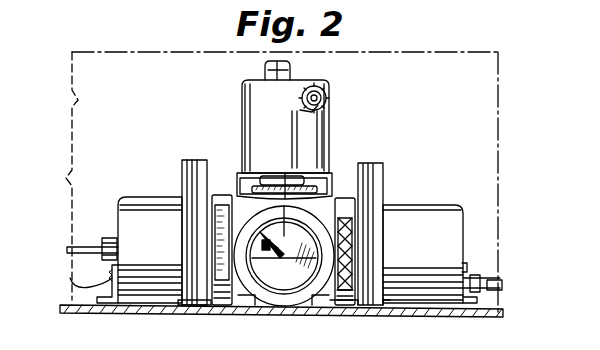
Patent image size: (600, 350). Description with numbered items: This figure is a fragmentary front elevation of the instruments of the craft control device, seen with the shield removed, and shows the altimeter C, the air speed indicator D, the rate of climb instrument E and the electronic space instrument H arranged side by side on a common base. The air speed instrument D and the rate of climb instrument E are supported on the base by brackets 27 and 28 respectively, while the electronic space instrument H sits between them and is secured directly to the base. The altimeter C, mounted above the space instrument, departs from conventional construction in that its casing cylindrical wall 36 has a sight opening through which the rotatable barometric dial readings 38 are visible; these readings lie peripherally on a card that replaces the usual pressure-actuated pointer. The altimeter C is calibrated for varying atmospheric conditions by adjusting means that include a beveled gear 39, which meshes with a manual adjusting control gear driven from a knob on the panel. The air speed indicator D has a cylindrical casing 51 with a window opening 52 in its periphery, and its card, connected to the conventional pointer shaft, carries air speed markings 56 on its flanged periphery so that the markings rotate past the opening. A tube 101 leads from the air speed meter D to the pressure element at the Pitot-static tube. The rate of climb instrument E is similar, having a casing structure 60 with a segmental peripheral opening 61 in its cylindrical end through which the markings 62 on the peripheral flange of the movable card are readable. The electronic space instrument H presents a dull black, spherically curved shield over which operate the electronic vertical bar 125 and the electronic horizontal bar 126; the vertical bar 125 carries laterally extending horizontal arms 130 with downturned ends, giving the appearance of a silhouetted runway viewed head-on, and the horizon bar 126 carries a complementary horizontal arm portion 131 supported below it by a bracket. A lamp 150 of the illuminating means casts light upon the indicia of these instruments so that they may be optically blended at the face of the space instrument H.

The altimeter C is at (262, 108).
The beveled gear 39 is at (326, 95).
The barometric dial readings 38 is at (310, 176).
The casing cylindrical wall 36 is at (328, 190).
The air speed markings 56 is at (230, 200).
The casing 51 is at (147, 213).
The lamp 150 is at (188, 233).
The tube 101 is at (72, 253).
The bracket 27 is at (70, 290).
The air speed indicator D is at (135, 269).
The window opening 52 is at (202, 306).
The electronic horizon bar 126 is at (272, 263).
The horizontal arm portion 131 is at (282, 272).
The electronic space instrument H is at (273, 274).
The electronic vertical bar 125 is at (268, 238).
The horizontal arms 130 is at (273, 247).
The segmental peripheral opening 61 is at (382, 237).
The markings 62 is at (350, 258).
The casing structure 60 is at (410, 212).
The rate of climb instrument E is at (457, 237).
The bracket 28 is at (470, 263).